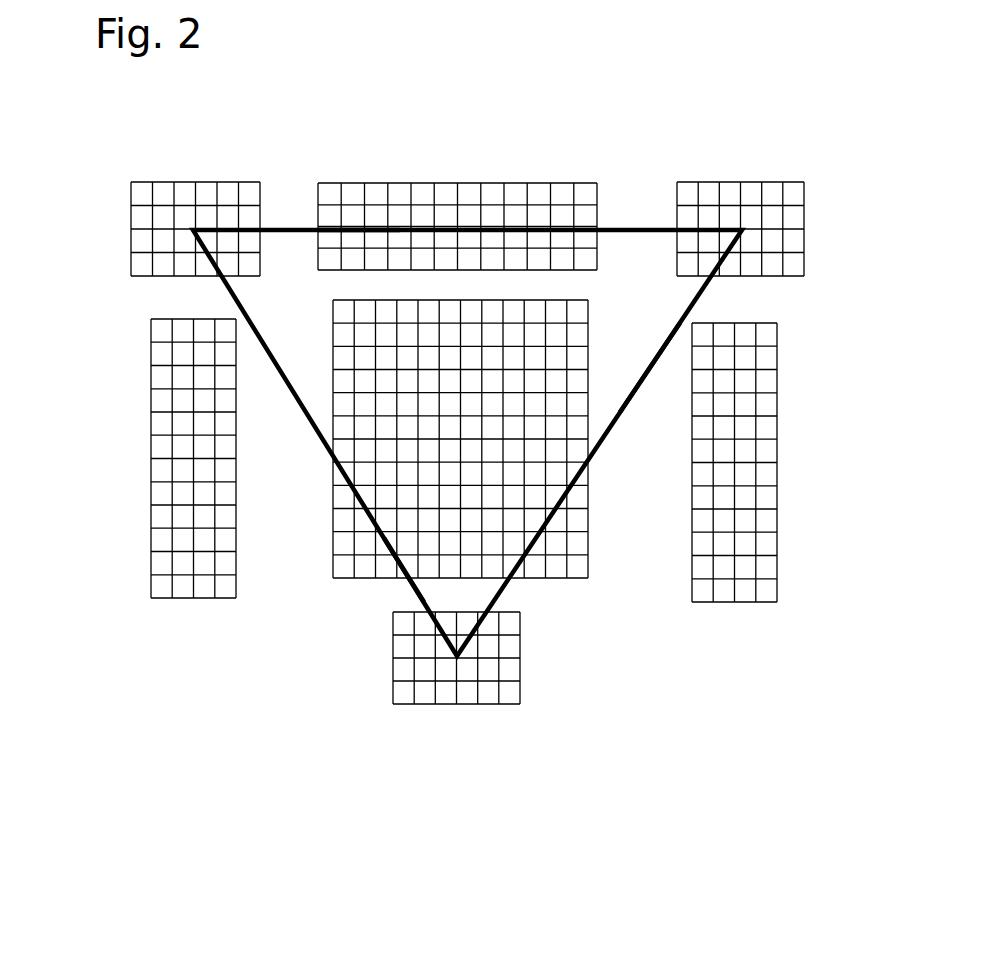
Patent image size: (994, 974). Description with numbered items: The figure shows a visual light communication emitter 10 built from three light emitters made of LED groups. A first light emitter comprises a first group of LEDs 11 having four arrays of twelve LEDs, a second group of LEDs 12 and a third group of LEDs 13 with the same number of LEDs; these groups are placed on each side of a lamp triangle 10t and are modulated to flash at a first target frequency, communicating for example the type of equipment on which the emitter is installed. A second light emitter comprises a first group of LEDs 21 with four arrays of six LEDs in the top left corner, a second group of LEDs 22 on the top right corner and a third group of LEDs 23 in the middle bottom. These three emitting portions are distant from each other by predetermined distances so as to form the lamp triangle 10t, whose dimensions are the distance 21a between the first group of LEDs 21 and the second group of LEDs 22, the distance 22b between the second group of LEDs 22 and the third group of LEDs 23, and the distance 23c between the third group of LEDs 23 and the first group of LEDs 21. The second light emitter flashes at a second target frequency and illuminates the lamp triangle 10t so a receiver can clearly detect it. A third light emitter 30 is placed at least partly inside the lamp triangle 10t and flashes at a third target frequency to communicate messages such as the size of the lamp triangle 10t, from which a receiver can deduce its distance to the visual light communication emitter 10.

The visual light communication emitter 10 is at (570, 60).
The lamp triangle 10t is at (688, 313).
The first group of LEDs 11 is at (573, 188).
The second group of LEDs 12 is at (730, 590).
The third group of LEDs 13 is at (205, 583).
The first group of LEDs 21 is at (207, 183).
The distance 21a is at (352, 228).
The second group of LEDs 22 is at (732, 187).
The distance 22b is at (647, 372).
The third group of LEDs 23 is at (480, 697).
The distance 23c is at (405, 582).
The third light emitter 30 is at (420, 413).